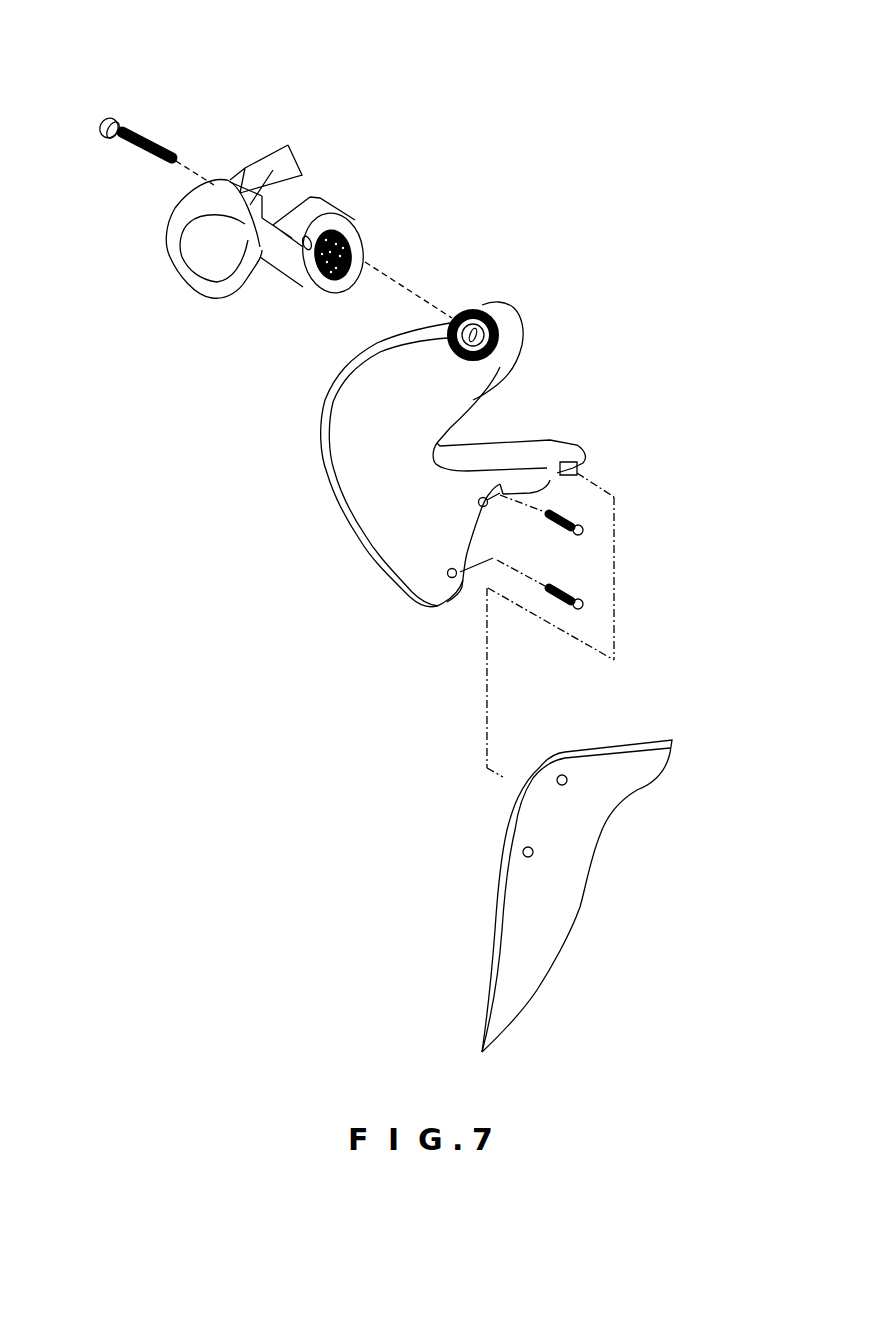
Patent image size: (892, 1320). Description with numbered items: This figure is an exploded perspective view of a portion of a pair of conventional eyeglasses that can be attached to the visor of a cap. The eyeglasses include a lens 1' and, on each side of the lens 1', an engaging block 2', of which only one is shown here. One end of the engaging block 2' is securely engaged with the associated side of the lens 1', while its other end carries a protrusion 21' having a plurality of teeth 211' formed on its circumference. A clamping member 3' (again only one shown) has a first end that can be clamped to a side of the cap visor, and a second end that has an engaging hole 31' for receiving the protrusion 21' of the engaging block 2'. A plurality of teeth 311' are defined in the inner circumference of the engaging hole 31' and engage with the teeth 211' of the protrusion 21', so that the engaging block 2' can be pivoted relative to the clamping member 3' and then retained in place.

The lens 1' is at (485, 896).
The engaging block 2' is at (527, 459).
The protrusion 21' is at (542, 248).
The teeth 211' is at (547, 258).
The clamping member 3' is at (332, 154).
The engaging hole 31' is at (379, 178).
The teeth 311' is at (405, 187).